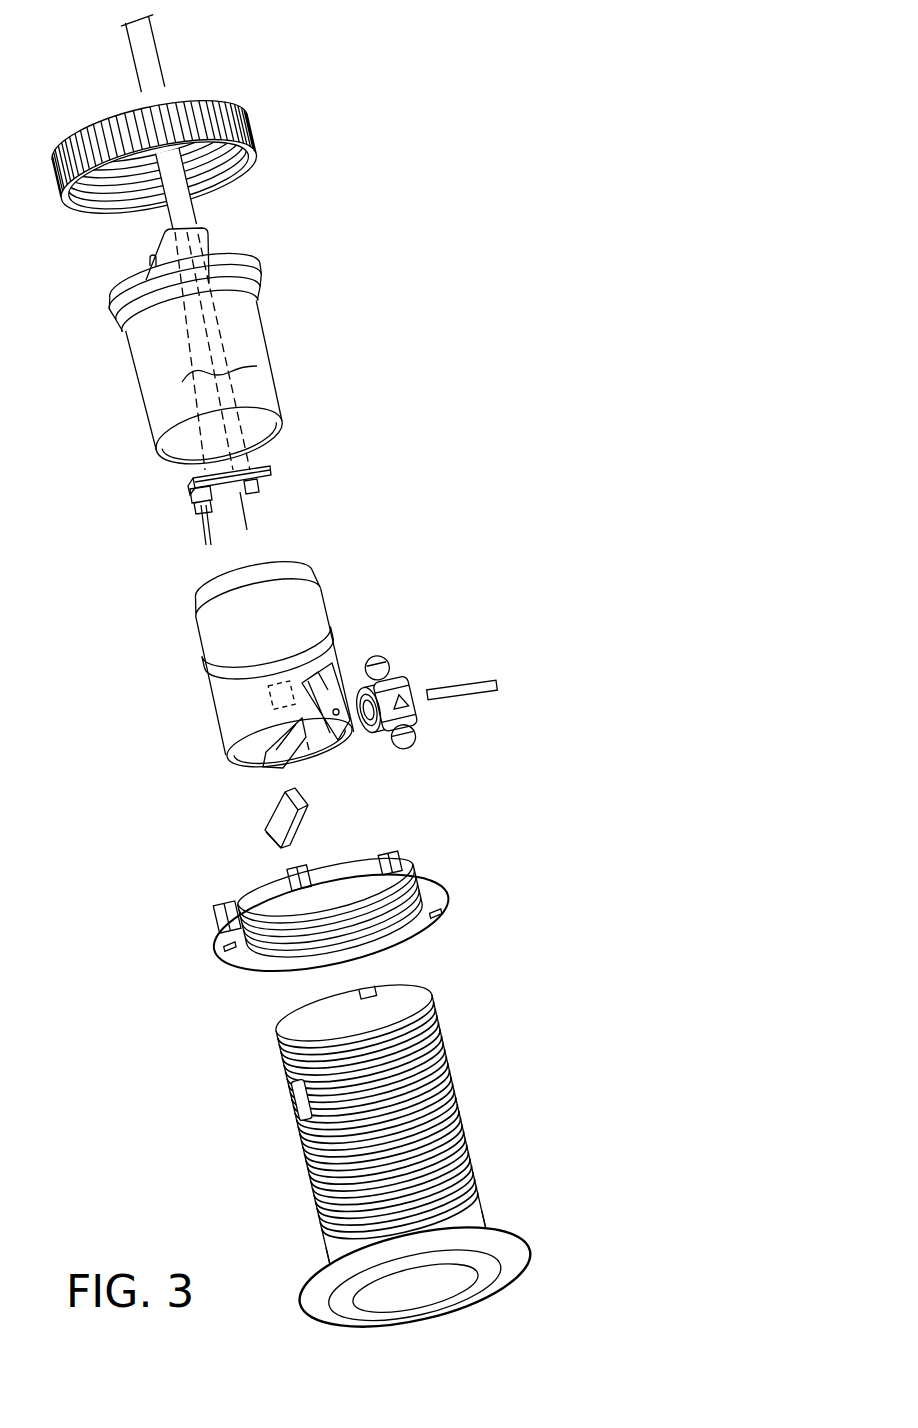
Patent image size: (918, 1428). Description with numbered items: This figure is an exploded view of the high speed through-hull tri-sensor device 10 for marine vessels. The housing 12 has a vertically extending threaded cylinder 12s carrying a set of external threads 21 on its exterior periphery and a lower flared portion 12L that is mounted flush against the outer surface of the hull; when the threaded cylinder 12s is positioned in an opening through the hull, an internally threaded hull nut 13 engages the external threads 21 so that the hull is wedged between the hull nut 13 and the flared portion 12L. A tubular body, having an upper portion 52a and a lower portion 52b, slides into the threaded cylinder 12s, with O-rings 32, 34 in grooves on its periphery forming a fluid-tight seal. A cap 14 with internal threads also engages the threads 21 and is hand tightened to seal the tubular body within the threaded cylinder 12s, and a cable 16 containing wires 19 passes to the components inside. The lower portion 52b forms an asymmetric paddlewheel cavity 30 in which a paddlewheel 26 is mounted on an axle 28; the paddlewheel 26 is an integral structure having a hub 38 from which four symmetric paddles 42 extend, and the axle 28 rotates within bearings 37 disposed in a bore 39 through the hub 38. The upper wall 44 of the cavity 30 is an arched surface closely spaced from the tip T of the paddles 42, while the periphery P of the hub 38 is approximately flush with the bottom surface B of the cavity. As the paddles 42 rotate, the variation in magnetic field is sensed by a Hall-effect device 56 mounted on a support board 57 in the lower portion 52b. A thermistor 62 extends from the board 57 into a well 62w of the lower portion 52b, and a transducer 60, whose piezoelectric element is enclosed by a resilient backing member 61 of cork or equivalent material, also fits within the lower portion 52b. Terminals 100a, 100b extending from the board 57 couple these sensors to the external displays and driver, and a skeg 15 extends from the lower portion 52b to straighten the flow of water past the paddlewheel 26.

The high speed through-hull tri-sensor device 10 is at (473, 477).
The housing 12 is at (460, 1120).
The lower flared portion 12L is at (530, 1247).
The threaded cylinder 12s is at (472, 1218).
The hull nut 13 is at (437, 880).
The cap 14 is at (212, 88).
The skeg 15 is at (282, 772).
The cable 16 is at (134, 60).
The wires 19 is at (257, 366).
The external threads 21 is at (440, 1042).
The paddlewheel 26 is at (408, 718).
The axle 28 is at (493, 675).
The asymmetric paddlewheel cavity 30 is at (330, 733).
The O-ring 32 is at (127, 330).
The O-ring 34 is at (207, 672).
The bearings 37 is at (368, 700).
The hub 38 is at (410, 685).
The bore 39 is at (368, 700).
The paddles 42 is at (398, 748).
The upper wall 44 is at (320, 682).
The upper portion 52a is at (263, 347).
The lower portion 52b is at (325, 602).
The Hall-effect device 56 is at (253, 500).
The support board 57 is at (268, 470).
The transducer 60 is at (277, 837).
The resilient backing member 61 is at (270, 823).
The thermistor 62 is at (250, 517).
The well 62w is at (268, 697).
The terminal 100a is at (200, 537).
The terminal 100b is at (212, 517).
The bottom surface B is at (307, 710).
The periphery P is at (412, 712).
The tip T is at (393, 655).